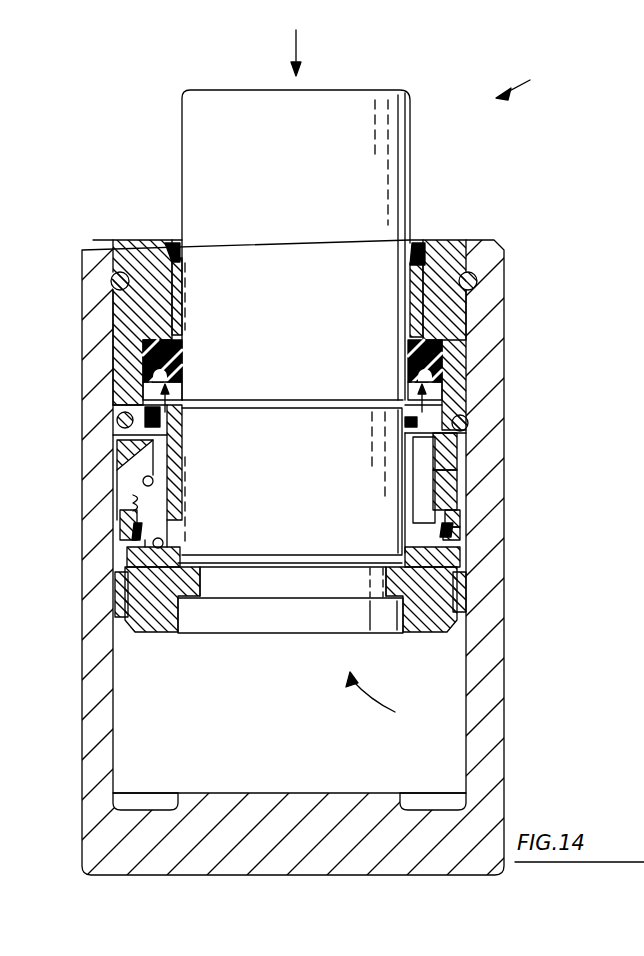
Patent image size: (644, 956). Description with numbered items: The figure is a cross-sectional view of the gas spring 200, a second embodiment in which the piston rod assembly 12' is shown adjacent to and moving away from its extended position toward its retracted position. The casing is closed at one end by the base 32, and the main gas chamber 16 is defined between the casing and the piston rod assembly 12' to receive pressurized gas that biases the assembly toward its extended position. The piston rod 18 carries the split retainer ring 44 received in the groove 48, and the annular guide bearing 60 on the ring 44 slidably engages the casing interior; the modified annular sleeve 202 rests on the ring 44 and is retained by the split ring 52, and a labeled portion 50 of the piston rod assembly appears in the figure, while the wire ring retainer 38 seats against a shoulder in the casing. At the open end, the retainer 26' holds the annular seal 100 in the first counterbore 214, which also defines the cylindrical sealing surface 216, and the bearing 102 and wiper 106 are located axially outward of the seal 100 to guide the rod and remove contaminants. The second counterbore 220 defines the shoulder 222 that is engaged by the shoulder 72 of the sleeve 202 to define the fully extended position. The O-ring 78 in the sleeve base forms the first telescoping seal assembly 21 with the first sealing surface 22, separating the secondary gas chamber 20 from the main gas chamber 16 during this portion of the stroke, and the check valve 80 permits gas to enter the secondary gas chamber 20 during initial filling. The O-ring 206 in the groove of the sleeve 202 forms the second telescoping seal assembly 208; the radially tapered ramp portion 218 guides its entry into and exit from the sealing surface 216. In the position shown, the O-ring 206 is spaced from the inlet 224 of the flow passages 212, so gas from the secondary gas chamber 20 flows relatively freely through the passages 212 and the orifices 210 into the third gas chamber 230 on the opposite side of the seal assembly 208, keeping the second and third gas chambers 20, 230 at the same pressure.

The gas spring 200 is at (537, 81).
The piston rod 18 is at (372, 100).
The retainer 26' is at (322, 407).
The wiper 106 is at (167, 250).
The wire ring retainer 38 is at (130, 270).
The bearing 102 is at (180, 292).
The annular seal 100 is at (408, 348).
The split ring 52 is at (183, 398).
The flow passages 212 is at (407, 395).
The third gas chamber 230 is at (150, 388).
The first counterbore 214 is at (435, 345).
The cylindrical sealing surface 216 is at (440, 377).
The second telescoping seal assembly 208 is at (440, 387).
The O-ring 206 is at (440, 404).
The inlet 224 is at (430, 434).
The shoulder 222 is at (450, 500).
The telescoping seal assembly 21 is at (465, 533).
The secondary gas chamber 20 is at (152, 452).
The radially tapered ramp portion 218 is at (143, 481).
The second counterbore 220 is at (133, 507).
The first sealing surface 22 is at (122, 527).
The O-ring 78 is at (136, 560).
The guide bearing 60 is at (138, 622).
The orifices 210 is at (184, 433).
The check valve 80 is at (175, 540).
The annular sleeve 202 is at (410, 485).
The shoulder 72 is at (432, 505).
The piston 50 is at (268, 400).
The retainer ring 44 is at (158, 620).
The groove 48 is at (275, 600).
The piston rod assembly 12' is at (375, 701).
The main gas chamber 16 is at (450, 718).
The base 32 is at (250, 870).